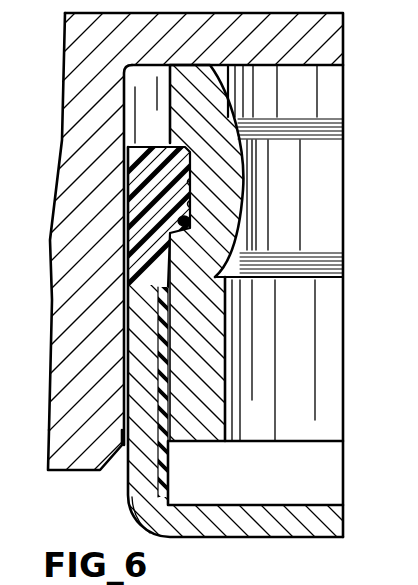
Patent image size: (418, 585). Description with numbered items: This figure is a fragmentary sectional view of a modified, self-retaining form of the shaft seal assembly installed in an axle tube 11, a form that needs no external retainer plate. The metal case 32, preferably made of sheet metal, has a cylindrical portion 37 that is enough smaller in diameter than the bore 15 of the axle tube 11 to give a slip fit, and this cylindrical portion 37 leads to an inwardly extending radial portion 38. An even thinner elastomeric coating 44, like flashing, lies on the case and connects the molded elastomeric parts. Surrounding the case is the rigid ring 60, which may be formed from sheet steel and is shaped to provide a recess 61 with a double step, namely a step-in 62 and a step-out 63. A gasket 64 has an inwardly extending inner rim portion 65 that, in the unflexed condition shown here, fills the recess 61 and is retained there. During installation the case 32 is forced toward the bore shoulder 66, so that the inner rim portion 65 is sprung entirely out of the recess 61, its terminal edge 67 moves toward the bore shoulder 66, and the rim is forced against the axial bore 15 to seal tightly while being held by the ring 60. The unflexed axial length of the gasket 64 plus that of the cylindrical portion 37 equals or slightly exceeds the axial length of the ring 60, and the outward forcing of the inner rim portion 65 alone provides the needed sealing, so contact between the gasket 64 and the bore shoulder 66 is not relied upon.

The axle tube 11 is at (62, 193).
The bore 15 is at (122, 148).
The metal case 32 is at (130, 477).
The cylindrical portion 37 is at (122, 425).
The radial portion 38 is at (282, 510).
The thin coating 44 is at (169, 483).
The rigid ring 60 is at (232, 166).
The recess 61 is at (190, 186).
The step-in 62 is at (190, 162).
The step-out 63 is at (186, 225).
The gasket 64 is at (150, 146).
The inner rim portion 65 is at (187, 206).
The bore shoulder 66 is at (344, 40).
The terminal edge 67 is at (160, 146).